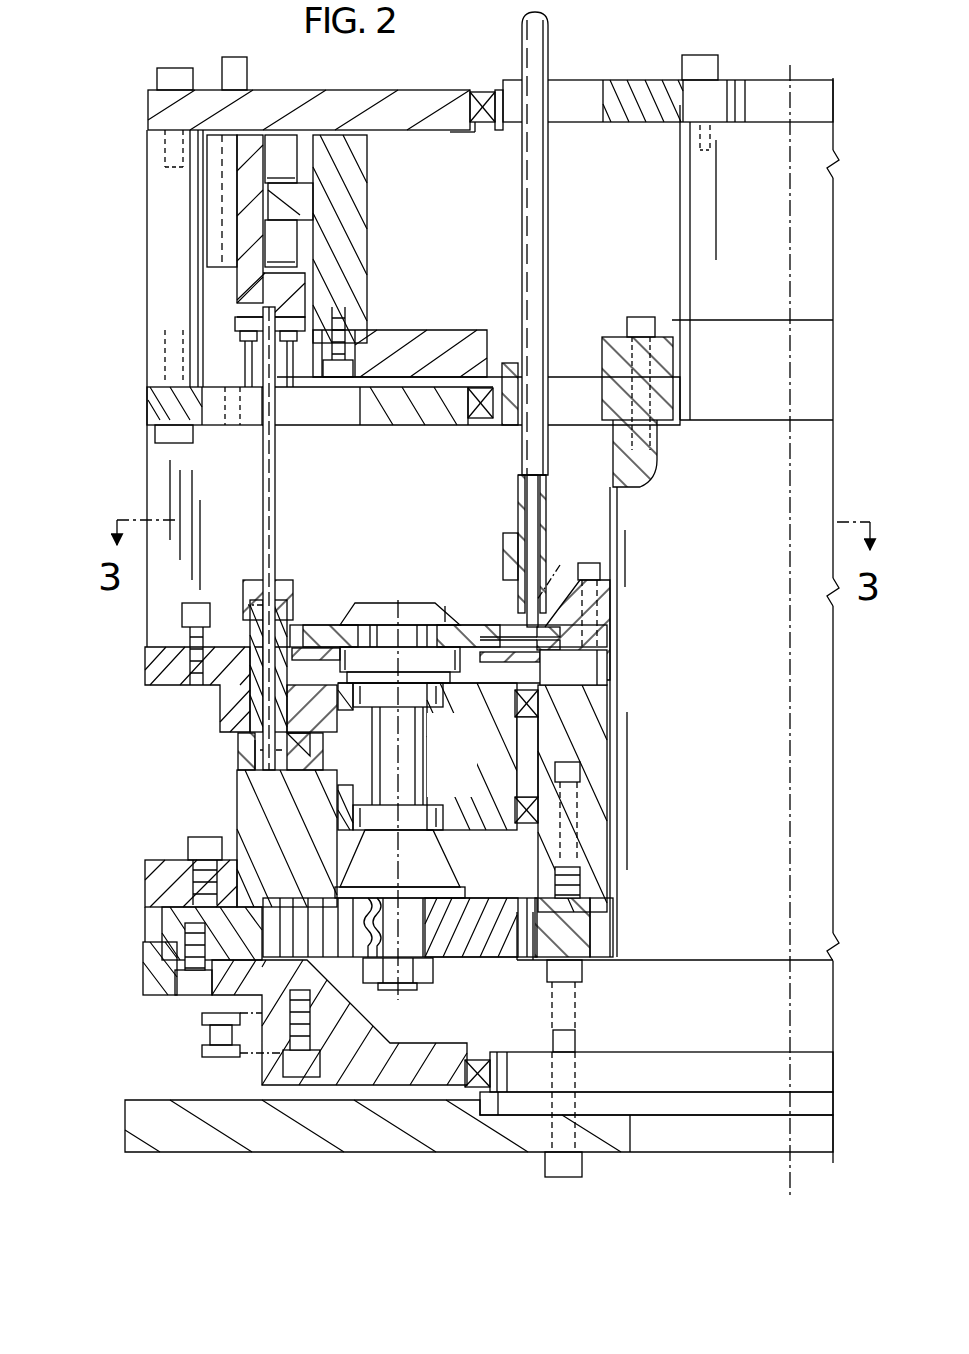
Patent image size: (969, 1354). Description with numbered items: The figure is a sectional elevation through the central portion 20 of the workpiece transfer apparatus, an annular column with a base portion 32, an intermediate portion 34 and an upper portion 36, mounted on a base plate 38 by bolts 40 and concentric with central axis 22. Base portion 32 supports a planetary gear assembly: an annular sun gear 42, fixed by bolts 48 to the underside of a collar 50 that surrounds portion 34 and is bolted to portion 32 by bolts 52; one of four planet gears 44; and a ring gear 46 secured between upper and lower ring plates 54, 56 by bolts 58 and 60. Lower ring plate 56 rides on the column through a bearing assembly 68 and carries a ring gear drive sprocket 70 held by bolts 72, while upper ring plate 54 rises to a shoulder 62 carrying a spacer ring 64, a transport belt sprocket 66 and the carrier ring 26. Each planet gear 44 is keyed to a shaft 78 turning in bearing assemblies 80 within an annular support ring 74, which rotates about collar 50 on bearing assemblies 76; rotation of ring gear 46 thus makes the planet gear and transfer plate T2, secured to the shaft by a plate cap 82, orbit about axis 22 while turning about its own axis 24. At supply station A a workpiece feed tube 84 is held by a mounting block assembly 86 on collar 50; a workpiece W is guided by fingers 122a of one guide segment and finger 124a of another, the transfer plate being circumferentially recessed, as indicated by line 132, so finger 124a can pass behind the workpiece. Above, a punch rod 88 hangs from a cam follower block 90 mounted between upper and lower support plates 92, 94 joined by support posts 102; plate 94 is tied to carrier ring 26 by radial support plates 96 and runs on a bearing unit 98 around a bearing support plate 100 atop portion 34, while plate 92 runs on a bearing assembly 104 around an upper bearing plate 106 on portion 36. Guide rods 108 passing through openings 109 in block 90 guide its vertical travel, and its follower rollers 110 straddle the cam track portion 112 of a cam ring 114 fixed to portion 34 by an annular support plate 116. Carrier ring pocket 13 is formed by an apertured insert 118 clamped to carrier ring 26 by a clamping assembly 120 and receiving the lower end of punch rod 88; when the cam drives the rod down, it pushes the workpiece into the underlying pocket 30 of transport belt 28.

The carrier ring pocket 13 is at (290, 622).
The central portion 20 is at (805, 725).
The central axis 22 is at (800, 460).
The planet gear axis 24 is at (395, 603).
The carrier ring 26 is at (165, 680).
The transport belt 28 is at (245, 748).
The transport belt pocket 30 is at (242, 765).
The base portion 32 is at (808, 1020).
The intermediate portion 34 is at (612, 512).
The upper portion 36 is at (690, 215).
The base plate 38 is at (365, 1140).
The bolts 40 is at (585, 1165).
The sun gear member 42 is at (572, 932).
The planet gear 44 is at (475, 947).
The ring gear 46 is at (170, 928).
The bolts 48 is at (567, 957).
The collar 50 is at (540, 863).
The bolts 52 is at (577, 812).
The upper ring plate 54 is at (165, 862).
The lower ring plate 56 is at (158, 988).
The bolts 58 is at (205, 838).
The bolts 60 is at (190, 995).
The shoulder 62 is at (315, 776).
The spacer ring 64 is at (325, 760).
The transport belt sprocket 66 is at (312, 745).
The bearing assembly 68 is at (480, 1060).
The ring gear drive sprocket 70 is at (262, 1052).
The bolts 72 is at (302, 1076).
The support ring 74 is at (440, 822).
The bearing assemblies 76 is at (535, 712).
The shaft 78 is at (415, 772).
The bearing assemblies 80 is at (380, 855).
The plate cap 82 is at (350, 628).
The workpiece feed tube 84 is at (540, 302).
The mounting block assembly 86 is at (608, 603).
The punch rod 88 is at (266, 478).
The cam follower block 90 is at (240, 300).
The upper support plate 92 is at (165, 105).
The lower support plate 94 is at (160, 400).
The radial support plates 96 is at (158, 472).
The bearing unit 98 is at (482, 425).
The bearing support plate 100 is at (615, 400).
The support posts 102 is at (160, 243).
The bearing assembly 104 is at (482, 102).
The upper bearing plate 106 is at (640, 100).
The guide rods 108 is at (225, 350).
The openings 109 is at (215, 197).
The follower rollers 110 is at (283, 148).
The cam track portion 112 is at (292, 203).
The cam ring 114 is at (352, 297).
The annular support plate 116 is at (432, 352).
The insert 118 is at (255, 592).
The clamping assembly 120 is at (200, 603).
The fingers 122a is at (562, 634).
The finger 124a is at (291, 666).
The broken line 132 is at (300, 630).
The transfer plate T2 is at (470, 620).
The supply station A is at (505, 610).
The workpiece wall W is at (568, 565).